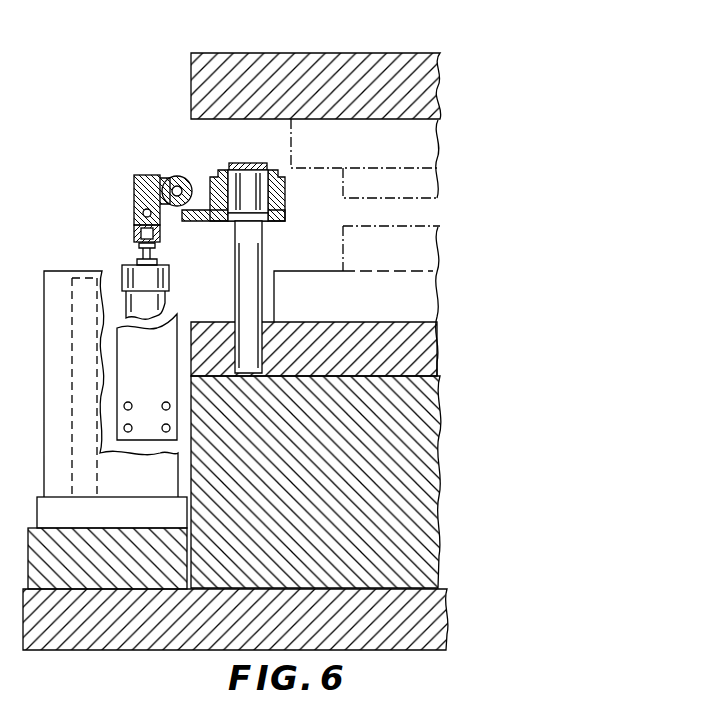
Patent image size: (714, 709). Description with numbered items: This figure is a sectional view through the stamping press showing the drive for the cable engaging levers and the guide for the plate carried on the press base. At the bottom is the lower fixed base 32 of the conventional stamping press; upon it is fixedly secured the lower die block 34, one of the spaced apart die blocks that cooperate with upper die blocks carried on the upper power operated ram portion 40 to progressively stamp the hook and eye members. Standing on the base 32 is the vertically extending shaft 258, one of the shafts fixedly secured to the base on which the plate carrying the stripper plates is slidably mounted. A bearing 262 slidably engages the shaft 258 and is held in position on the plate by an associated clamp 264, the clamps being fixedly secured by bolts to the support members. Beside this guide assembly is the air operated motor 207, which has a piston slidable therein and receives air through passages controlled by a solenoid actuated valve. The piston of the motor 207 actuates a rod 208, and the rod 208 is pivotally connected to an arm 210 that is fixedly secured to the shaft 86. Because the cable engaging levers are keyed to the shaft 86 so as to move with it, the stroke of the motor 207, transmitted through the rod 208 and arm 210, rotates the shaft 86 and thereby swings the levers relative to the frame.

The upper power operated ram portion 40 is at (425, 92).
The lower die block 34 is at (422, 248).
The lower fixed base 32 is at (427, 618).
The vertically extending shaft 258 is at (250, 252).
The bearing 262 is at (287, 179).
The clamp 264 is at (285, 198).
The arm 210 is at (145, 175).
The shaft 86 is at (179, 177).
The rod 208 is at (147, 257).
The air operated motor 207 is at (165, 295).